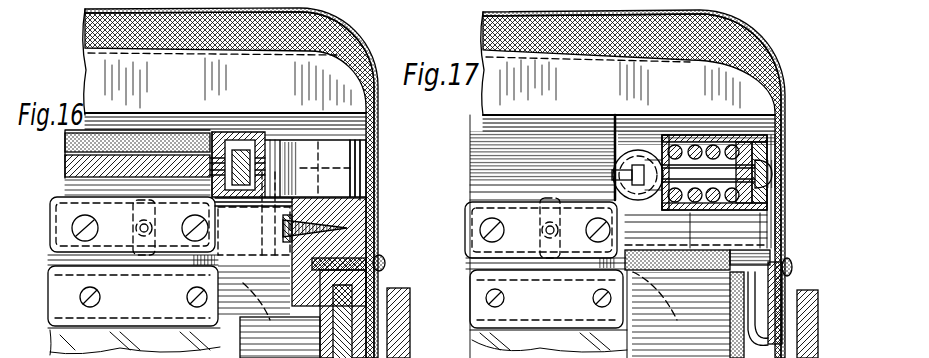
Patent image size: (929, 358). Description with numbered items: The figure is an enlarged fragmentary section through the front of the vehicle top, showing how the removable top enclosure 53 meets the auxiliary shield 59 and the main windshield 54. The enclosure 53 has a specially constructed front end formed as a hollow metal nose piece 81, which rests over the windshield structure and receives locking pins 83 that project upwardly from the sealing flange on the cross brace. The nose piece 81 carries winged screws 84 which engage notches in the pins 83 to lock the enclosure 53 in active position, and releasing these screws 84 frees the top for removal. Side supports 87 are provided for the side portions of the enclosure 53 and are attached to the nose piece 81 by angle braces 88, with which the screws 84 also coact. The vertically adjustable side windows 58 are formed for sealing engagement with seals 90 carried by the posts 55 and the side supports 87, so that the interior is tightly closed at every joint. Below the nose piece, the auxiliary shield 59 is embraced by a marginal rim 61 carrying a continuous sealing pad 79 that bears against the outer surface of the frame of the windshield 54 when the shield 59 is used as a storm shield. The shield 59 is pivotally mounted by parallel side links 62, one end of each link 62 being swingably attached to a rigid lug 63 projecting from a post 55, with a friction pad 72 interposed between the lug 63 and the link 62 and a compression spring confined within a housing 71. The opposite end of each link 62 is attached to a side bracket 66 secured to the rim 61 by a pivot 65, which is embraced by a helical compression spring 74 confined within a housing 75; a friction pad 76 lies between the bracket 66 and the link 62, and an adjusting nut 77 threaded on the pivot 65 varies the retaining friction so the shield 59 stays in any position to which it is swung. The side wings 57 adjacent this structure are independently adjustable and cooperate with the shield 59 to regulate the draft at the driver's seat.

In FIG. 16, the top enclosure 53 is at (180, 33).
In FIG. 17, the top enclosure 53 is at (597, 36).
In FIG. 16, the nose piece 81 is at (219, 81).
In FIG. 17, the nose piece 81 is at (613, 84).
In FIG. 16, the sealing pad 79 is at (132, 140).
In FIG. 16, the auxiliary shield 59 is at (178, 165).
In FIG. 16, the marginal rim 61 is at (268, 148).
In FIG. 16, the side bracket 66 is at (310, 162).
In FIG. 17, the side bracket 66 is at (760, 117).
In FIG. 16, the friction pad 76 is at (352, 128).
In FIG. 17, the friction pad 76 is at (757, 202).
In FIG. 16, the side link 62 is at (351, 156).
In FIG. 17, the side link 62 is at (762, 141).
In FIG. 16, the lug 63 is at (362, 187).
In FIG. 17, the lug 63 is at (771, 163).
In FIG. 16, the friction pad 72 is at (355, 203).
In FIG. 16, the side support 87 is at (345, 222).
In FIG. 16, the seal 90 is at (346, 258).
In FIG. 16, the side window 58 is at (340, 307).
In FIG. 16, the side wing 57 is at (400, 303).
In FIG. 17, the side wing 57 is at (826, 281).
In FIG. 16, the winged screw 84 is at (138, 237).
In FIG. 17, the winged screw 84 is at (541, 232).
In FIG. 16, the locking pin 83 is at (171, 286).
In FIG. 17, the locking pin 83 is at (548, 200).
In FIG. 16, the angle brace 88 is at (133, 296).
In FIG. 17, the angle brace 88 is at (546, 299).
In FIG. 16, the main windshield 54 is at (134, 342).
In FIG. 17, the main windshield 54 is at (600, 314).
In FIG. 16, the post 55 is at (269, 311).
In FIG. 17, the housing 75 is at (664, 143).
In FIG. 17, the compression spring 74 is at (684, 145).
In FIG. 17, the pivot 65 is at (728, 170).
In FIG. 17, the adjusting nut 77 is at (612, 160).
In FIG. 17, the housing 71 is at (708, 286).